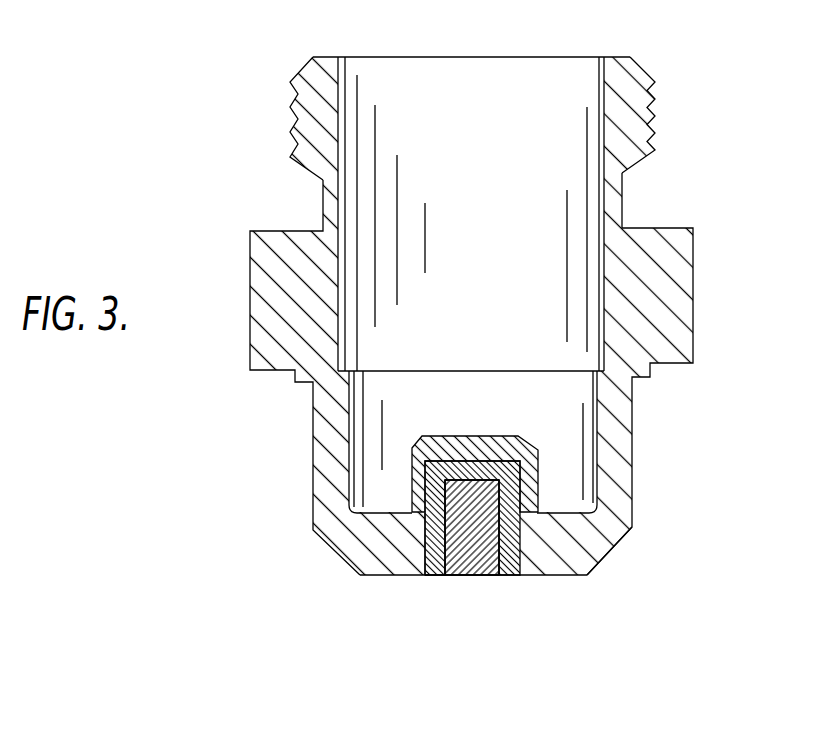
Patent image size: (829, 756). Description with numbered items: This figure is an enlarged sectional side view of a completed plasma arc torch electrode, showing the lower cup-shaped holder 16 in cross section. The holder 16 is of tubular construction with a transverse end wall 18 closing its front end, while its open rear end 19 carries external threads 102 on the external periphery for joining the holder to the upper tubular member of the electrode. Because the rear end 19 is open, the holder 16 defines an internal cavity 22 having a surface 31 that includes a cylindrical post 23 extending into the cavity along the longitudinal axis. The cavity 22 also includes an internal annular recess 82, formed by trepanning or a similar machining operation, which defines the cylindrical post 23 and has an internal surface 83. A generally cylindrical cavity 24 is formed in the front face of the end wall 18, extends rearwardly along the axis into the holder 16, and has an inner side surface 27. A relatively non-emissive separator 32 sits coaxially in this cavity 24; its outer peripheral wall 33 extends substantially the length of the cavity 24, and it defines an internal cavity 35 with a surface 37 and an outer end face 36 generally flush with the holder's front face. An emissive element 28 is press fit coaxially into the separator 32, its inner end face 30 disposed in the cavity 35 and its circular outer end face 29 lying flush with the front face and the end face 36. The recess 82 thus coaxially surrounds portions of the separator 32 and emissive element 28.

The holder 16 is at (264, 186).
The transverse end wall 18 is at (533, 563).
The rear end 19 is at (328, 57).
The internal cavity 22 is at (577, 125).
The cylindrical post 23 is at (493, 437).
The cylindrical cavity 24 is at (509, 578).
The inner side surface 27 is at (505, 488).
The emissive element 28 is at (402, 576).
The outer end face 29 is at (455, 578).
The inner end face 30 is at (467, 478).
The surface 31 is at (340, 133).
The separator 32 is at (455, 526).
The outer peripheral wall 33 is at (445, 483).
The internal cavity 35 is at (482, 578).
The outer end face 36 is at (437, 578).
The surface 37 is at (450, 508).
The internal annular recess 82 is at (353, 388).
The internal surface 83 is at (413, 455).
The external threads 102 is at (655, 117).